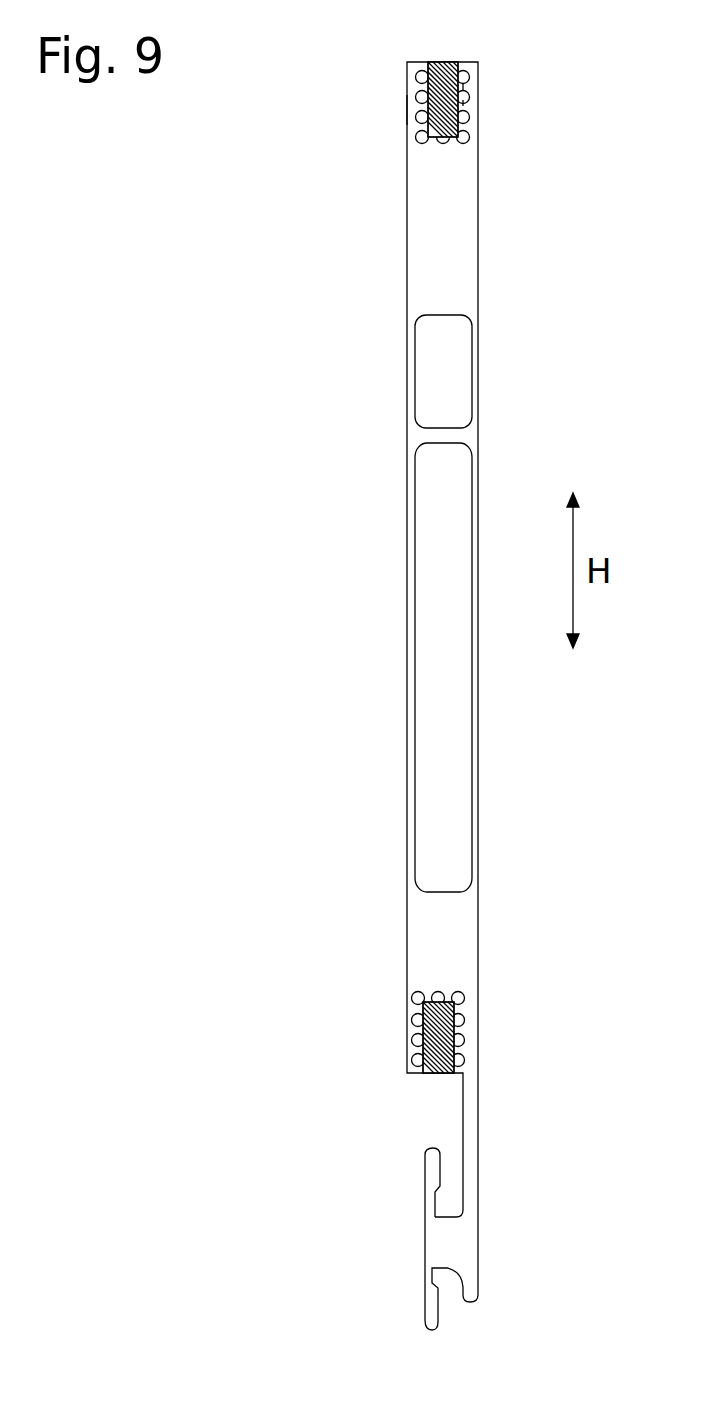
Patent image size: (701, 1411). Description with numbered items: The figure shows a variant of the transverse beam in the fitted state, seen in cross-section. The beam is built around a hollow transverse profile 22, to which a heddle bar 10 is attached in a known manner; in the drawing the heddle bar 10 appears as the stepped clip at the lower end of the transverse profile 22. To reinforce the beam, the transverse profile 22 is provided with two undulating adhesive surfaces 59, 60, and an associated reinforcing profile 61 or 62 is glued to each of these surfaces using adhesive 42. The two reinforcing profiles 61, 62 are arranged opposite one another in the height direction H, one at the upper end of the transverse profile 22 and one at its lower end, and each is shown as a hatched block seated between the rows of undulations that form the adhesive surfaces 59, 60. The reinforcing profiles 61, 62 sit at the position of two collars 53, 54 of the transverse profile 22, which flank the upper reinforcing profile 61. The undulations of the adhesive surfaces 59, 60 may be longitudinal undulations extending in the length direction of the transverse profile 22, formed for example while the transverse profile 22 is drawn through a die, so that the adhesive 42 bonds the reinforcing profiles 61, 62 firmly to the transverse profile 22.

The heddle bar 10 is at (433, 1167).
The transverse profile 22 is at (425, 275).
The adhesive 42 is at (465, 113).
The collar 53 is at (413, 108).
The collar 54 is at (470, 103).
The undulating adhesive surface 59 is at (467, 93).
The undulating adhesive surface 60 is at (457, 1040).
The reinforcing profile 61 is at (443, 62).
The reinforcing profile 62 is at (437, 1073).